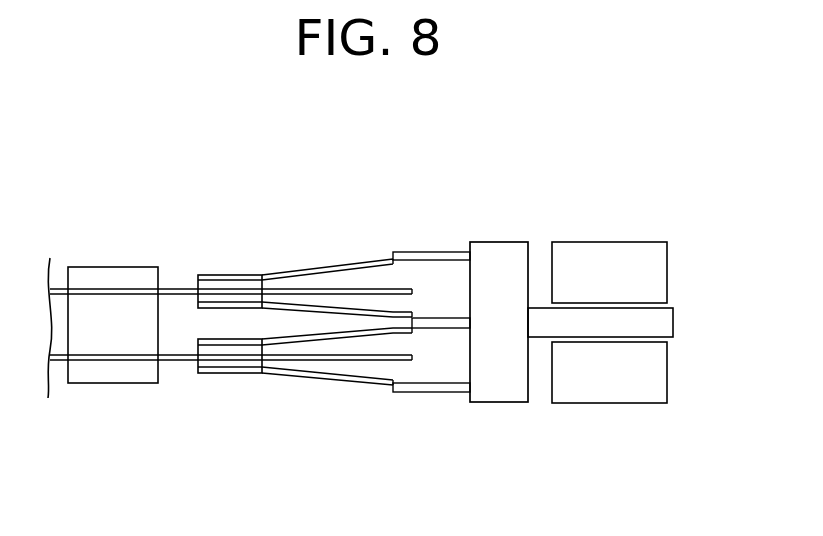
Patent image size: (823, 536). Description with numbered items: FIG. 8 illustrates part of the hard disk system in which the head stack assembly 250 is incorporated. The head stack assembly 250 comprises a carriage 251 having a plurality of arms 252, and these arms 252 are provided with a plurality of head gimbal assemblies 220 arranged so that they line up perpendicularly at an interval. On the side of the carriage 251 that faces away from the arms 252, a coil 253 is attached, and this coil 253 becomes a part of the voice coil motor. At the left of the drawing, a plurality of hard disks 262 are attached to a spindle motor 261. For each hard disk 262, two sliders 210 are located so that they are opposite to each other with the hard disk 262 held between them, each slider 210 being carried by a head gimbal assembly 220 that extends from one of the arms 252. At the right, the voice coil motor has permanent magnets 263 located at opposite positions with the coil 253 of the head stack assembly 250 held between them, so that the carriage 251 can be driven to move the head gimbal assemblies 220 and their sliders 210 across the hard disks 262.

The slider 210 is at (195, 282).
The head gimbal assembly 220 is at (321, 258).
The head stack assembly 250 is at (498, 241).
The carriage 251 is at (478, 242).
The arm 252 is at (410, 252).
The coil 253 is at (658, 323).
The spindle motor 261 is at (96, 272).
The hard disk 262 is at (172, 287).
The permanent magnet 263 is at (600, 242).